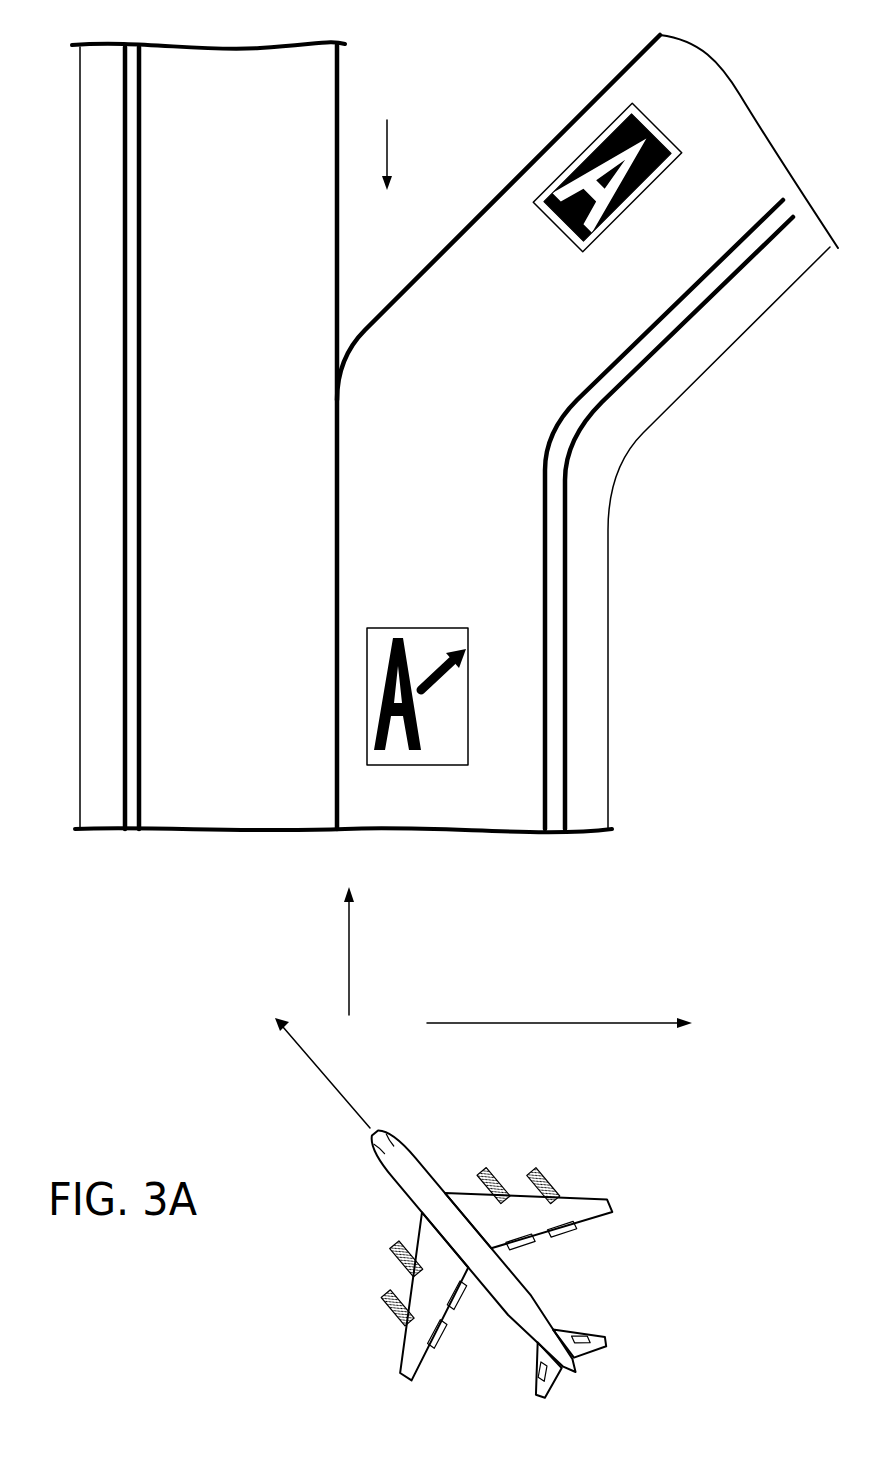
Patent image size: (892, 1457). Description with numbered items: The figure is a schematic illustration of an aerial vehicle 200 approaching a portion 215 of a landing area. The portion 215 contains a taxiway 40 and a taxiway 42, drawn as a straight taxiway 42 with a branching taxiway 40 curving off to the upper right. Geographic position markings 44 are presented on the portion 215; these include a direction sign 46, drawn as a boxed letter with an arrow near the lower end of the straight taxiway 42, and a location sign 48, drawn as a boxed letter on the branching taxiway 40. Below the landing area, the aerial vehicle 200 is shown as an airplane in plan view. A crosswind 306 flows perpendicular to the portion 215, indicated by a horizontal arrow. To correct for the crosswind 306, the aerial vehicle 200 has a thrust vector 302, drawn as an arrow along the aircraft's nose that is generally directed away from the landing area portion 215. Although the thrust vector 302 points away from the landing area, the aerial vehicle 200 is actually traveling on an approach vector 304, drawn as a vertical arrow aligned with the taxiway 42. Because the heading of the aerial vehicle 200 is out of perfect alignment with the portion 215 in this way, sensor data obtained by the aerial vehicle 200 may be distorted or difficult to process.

The taxiway 40 is at (507, 377).
The taxiway 42 is at (200, 413).
The geographic position markings 44 is at (626, 100).
The direction sign 46 is at (440, 755).
The location sign 48 is at (597, 148).
The aerial vehicle 200 is at (461, 1142).
The portion of the landing area 215 is at (387, 120).
The thrust vector 302 is at (323, 1065).
The approach vector 304 is at (349, 973).
The crosswind 306 is at (559, 1009).